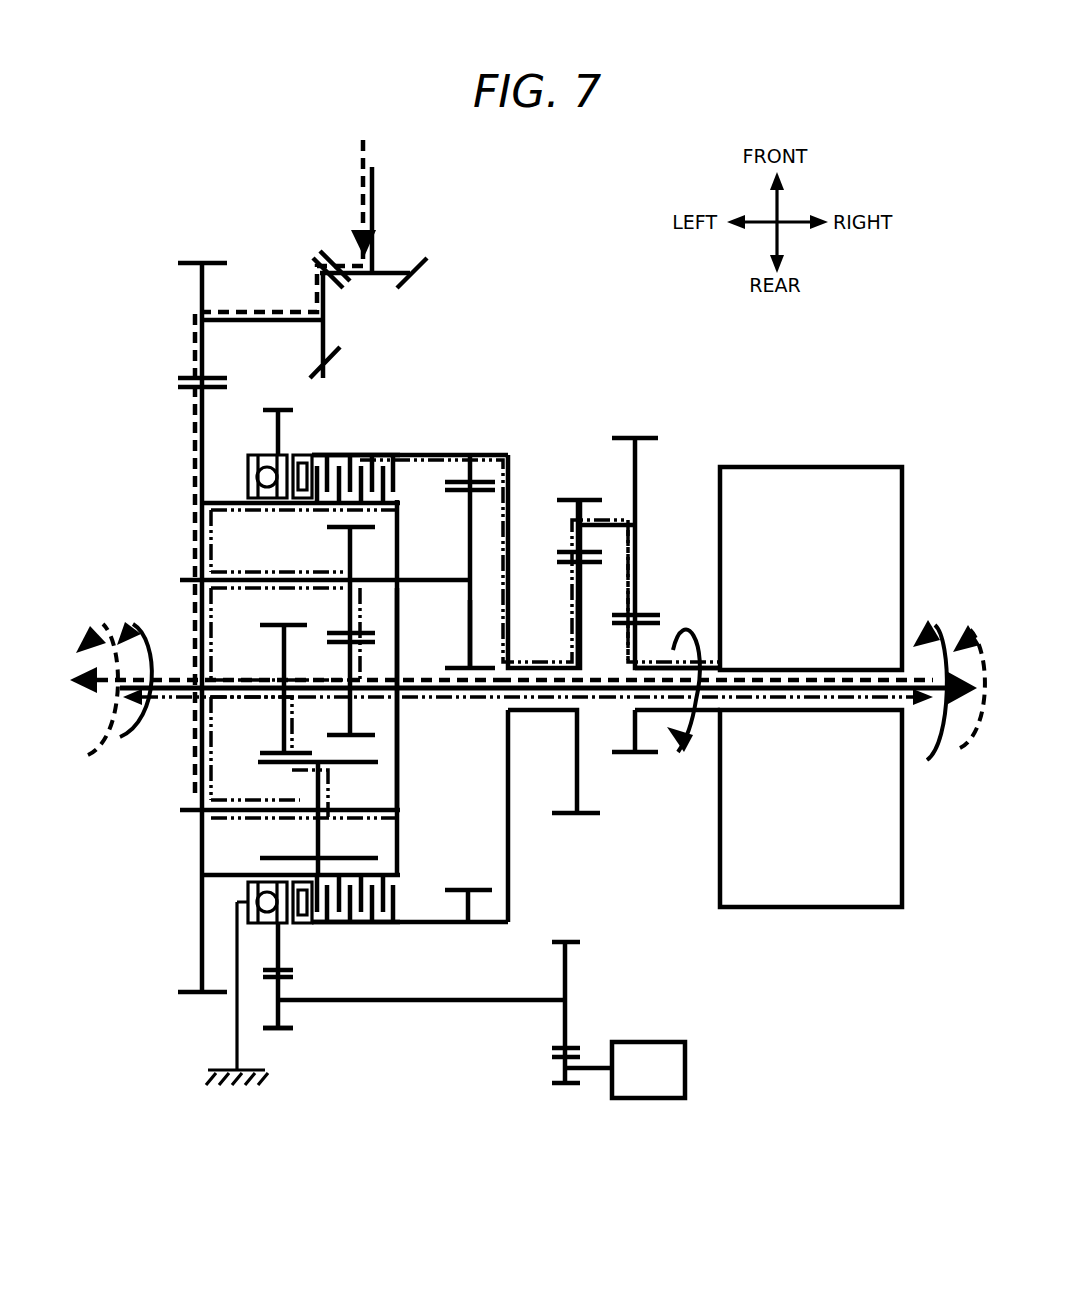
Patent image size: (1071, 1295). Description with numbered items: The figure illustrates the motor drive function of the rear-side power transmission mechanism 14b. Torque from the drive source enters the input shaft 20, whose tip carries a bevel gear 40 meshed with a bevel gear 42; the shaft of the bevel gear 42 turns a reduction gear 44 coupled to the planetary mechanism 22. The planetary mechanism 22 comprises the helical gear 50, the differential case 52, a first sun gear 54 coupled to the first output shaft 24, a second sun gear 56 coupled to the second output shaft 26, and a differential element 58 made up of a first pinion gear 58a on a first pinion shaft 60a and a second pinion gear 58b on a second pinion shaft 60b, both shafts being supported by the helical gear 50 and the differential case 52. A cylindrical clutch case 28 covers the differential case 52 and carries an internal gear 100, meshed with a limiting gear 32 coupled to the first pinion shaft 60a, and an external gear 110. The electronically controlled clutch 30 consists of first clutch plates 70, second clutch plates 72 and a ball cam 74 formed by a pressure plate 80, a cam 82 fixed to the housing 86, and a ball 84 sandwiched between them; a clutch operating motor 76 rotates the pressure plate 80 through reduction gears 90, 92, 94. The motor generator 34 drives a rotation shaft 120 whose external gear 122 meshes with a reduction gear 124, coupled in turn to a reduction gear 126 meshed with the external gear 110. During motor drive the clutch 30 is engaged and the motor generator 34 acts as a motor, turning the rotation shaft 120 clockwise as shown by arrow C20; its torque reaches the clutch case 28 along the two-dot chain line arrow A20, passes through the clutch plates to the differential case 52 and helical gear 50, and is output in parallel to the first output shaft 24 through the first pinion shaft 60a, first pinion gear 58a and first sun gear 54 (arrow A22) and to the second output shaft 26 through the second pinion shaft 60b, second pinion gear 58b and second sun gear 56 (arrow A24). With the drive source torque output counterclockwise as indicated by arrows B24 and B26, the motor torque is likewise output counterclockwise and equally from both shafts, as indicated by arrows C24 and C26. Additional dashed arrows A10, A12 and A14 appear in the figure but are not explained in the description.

The power transmission mechanism 14b is at (622, 231).
The input shaft 20 is at (374, 216).
The axis of input shaft A10 is at (360, 195).
The bevel gear 40 is at (393, 278).
The bevel gear 42 is at (326, 332).
The reduction gear 44 is at (202, 298).
The helical gear 50 is at (200, 492).
The pressure plate 80 is at (286, 452).
The cam 82 is at (257, 462).
The ball 84 is at (256, 478).
The ball cam 74 is at (343, 435).
The second clutch plates 72 is at (374, 456).
The electronically controlled clutch 30 is at (440, 388).
The first clutch plates 70 is at (397, 508).
The differential case 52 is at (398, 553).
The clutch case 28 is at (463, 455).
The limiting gear 32 is at (470, 656).
The internal gear 100 is at (472, 462).
The reduction gear 126 is at (578, 500).
The external gear 110 is at (578, 605).
The reduction gear 124 is at (640, 440).
The external gear 122 is at (642, 648).
The two-dot chain line arrow A20 is at (632, 543).
The rotation shaft 120 is at (697, 655).
The motor generator 34 is at (818, 467).
The first output shaft 24 is at (822, 693).
The axis A14 is at (175, 680).
The axis A12 is at (866, 680).
The two-dot chain line arrow A24 is at (160, 700).
The second output shaft 26 is at (171, 699).
The two-dot chain line arrow A22 is at (862, 700).
The arrow C26 is at (123, 752).
The arrow B26 is at (97, 762).
The arrow C20 is at (676, 755).
The arrow C24 is at (925, 758).
The arrow B24 is at (967, 762).
The planetary mechanism 22 is at (205, 570).
The differential element 58 is at (266, 524).
The first pinion gear 58a is at (349, 550).
The first sun gear 54 is at (350, 682).
The first pinion shaft 60a is at (245, 590).
The second sun gear 56 is at (284, 670).
The second pinion shaft 60b is at (243, 818).
The second pinion gear 58b is at (318, 848).
The housing 86 is at (264, 1068).
The reduction gear 94 is at (284, 1026).
The reduction gear 92 is at (567, 968).
The reduction gear 90 is at (565, 1069).
The clutch operating motor 76 is at (650, 1042).